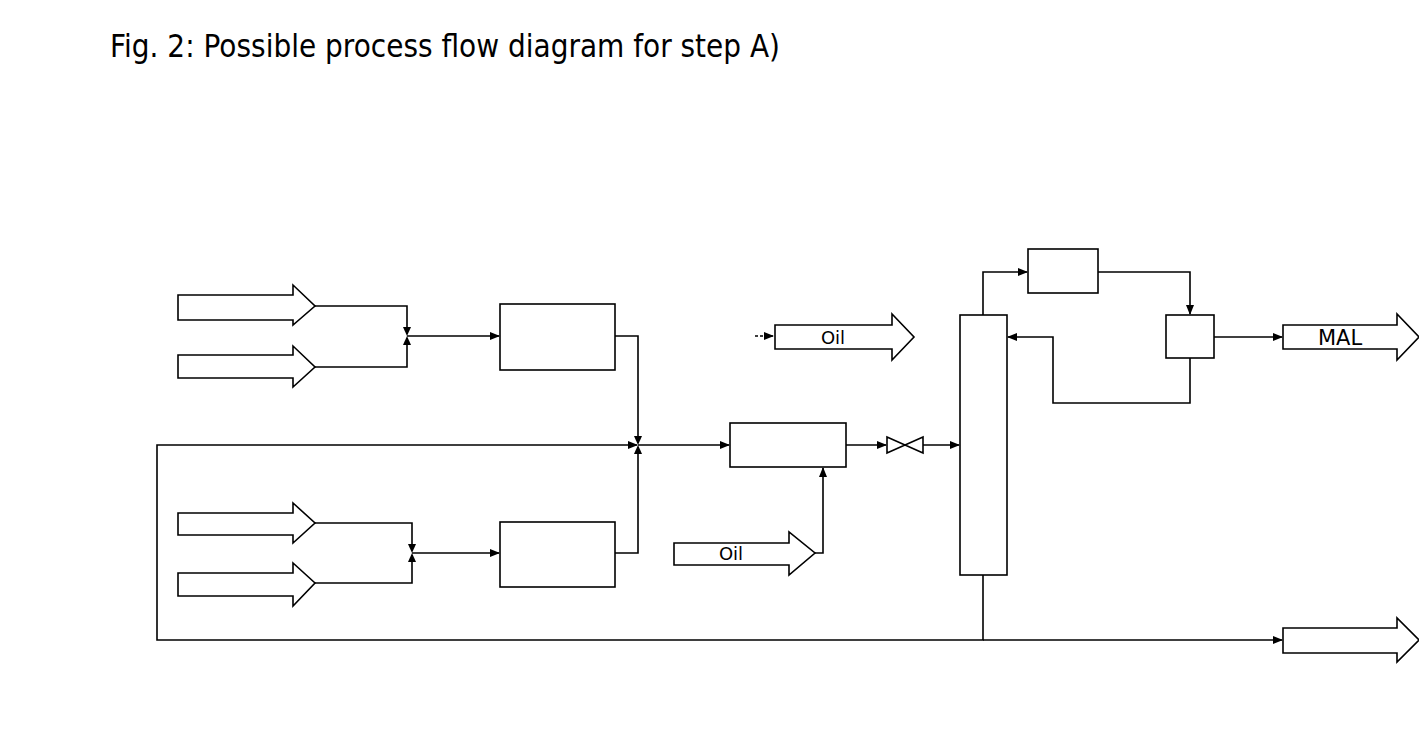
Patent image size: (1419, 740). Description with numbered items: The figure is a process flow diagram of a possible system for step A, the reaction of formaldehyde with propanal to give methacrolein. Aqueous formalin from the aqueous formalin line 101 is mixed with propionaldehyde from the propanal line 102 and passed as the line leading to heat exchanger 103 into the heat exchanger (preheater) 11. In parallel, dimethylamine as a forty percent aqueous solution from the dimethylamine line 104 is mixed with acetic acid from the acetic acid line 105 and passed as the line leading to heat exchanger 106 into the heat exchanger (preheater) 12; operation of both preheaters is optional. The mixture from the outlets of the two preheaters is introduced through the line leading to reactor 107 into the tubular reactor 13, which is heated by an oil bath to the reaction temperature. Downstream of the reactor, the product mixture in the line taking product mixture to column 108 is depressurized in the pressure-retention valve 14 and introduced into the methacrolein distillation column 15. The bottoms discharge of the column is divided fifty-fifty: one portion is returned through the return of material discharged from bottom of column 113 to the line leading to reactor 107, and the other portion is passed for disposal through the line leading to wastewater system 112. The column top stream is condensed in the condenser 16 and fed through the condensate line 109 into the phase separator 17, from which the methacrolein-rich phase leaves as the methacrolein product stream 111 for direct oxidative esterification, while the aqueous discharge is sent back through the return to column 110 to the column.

The aqueous formalin line 101 is at (294, 306).
The propanal line 102 is at (294, 360).
The line leading to heat exchanger 103 is at (453, 319).
The heat exchanger (preheater) 11 is at (557, 337).
The dimethylamine line 104 is at (297, 522).
The acetic acid line 105 is at (297, 578).
The line leading to heat exchanger 106 is at (455, 537).
The heat exchanger (preheater) 12 is at (557, 554).
The line leading to reactor 107 is at (672, 444).
The tubular reactor 13 is at (788, 445).
The line taking product mixture to column 108 is at (902, 425).
The pressure-retention valve 14 is at (905, 471).
The MAL distillation column 15 is at (983, 445).
The condenser 16 is at (1063, 271).
The condensate line 109 is at (1144, 278).
The phase separator 17 is at (1190, 336).
The return to column 110 is at (1099, 370).
The MAL to stage B) 111 is at (1248, 320).
The line leading to wastewater system 112 is at (1201, 636).
The return of material discharged from bottom of column 113 is at (570, 542).